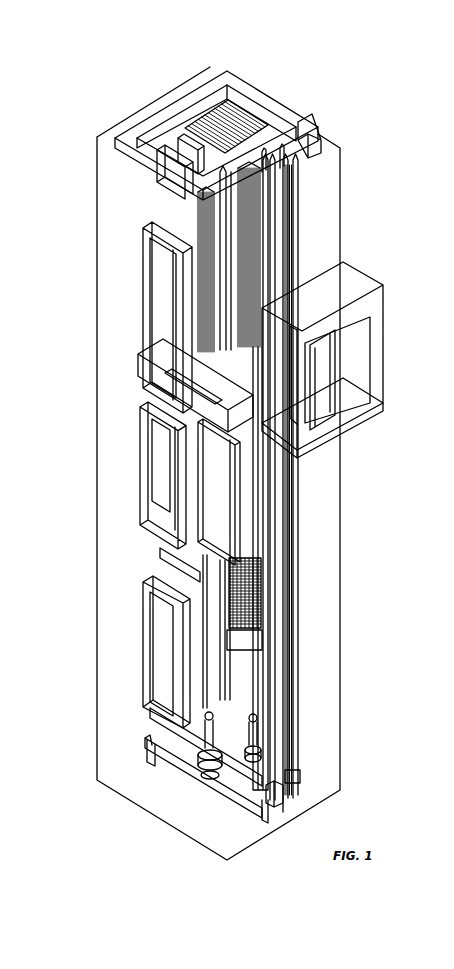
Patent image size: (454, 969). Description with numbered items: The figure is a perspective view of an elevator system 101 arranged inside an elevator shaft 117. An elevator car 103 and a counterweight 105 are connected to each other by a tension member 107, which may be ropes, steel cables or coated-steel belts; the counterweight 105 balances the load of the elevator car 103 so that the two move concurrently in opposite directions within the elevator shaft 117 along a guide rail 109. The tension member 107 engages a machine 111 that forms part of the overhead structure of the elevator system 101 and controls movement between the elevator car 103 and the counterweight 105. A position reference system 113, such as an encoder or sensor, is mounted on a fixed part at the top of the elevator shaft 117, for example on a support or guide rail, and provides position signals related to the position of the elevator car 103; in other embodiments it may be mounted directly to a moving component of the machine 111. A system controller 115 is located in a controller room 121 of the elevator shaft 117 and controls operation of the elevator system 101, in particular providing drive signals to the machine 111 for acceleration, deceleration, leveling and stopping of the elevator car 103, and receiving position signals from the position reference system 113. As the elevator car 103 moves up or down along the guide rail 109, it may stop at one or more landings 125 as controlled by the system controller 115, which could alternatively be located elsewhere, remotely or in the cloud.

The elevator system 101 is at (364, 82).
The elevator car 103 is at (215, 488).
The counterweight 105 is at (250, 608).
The tension member 107 is at (227, 288).
The guide rail 109 is at (255, 561).
The machine 111 is at (167, 135).
The position reference system 113 is at (337, 153).
The system controller 115 is at (347, 367).
The elevator shaft 117 is at (130, 561).
The controller room 121 is at (386, 285).
The landing 125 is at (142, 272).